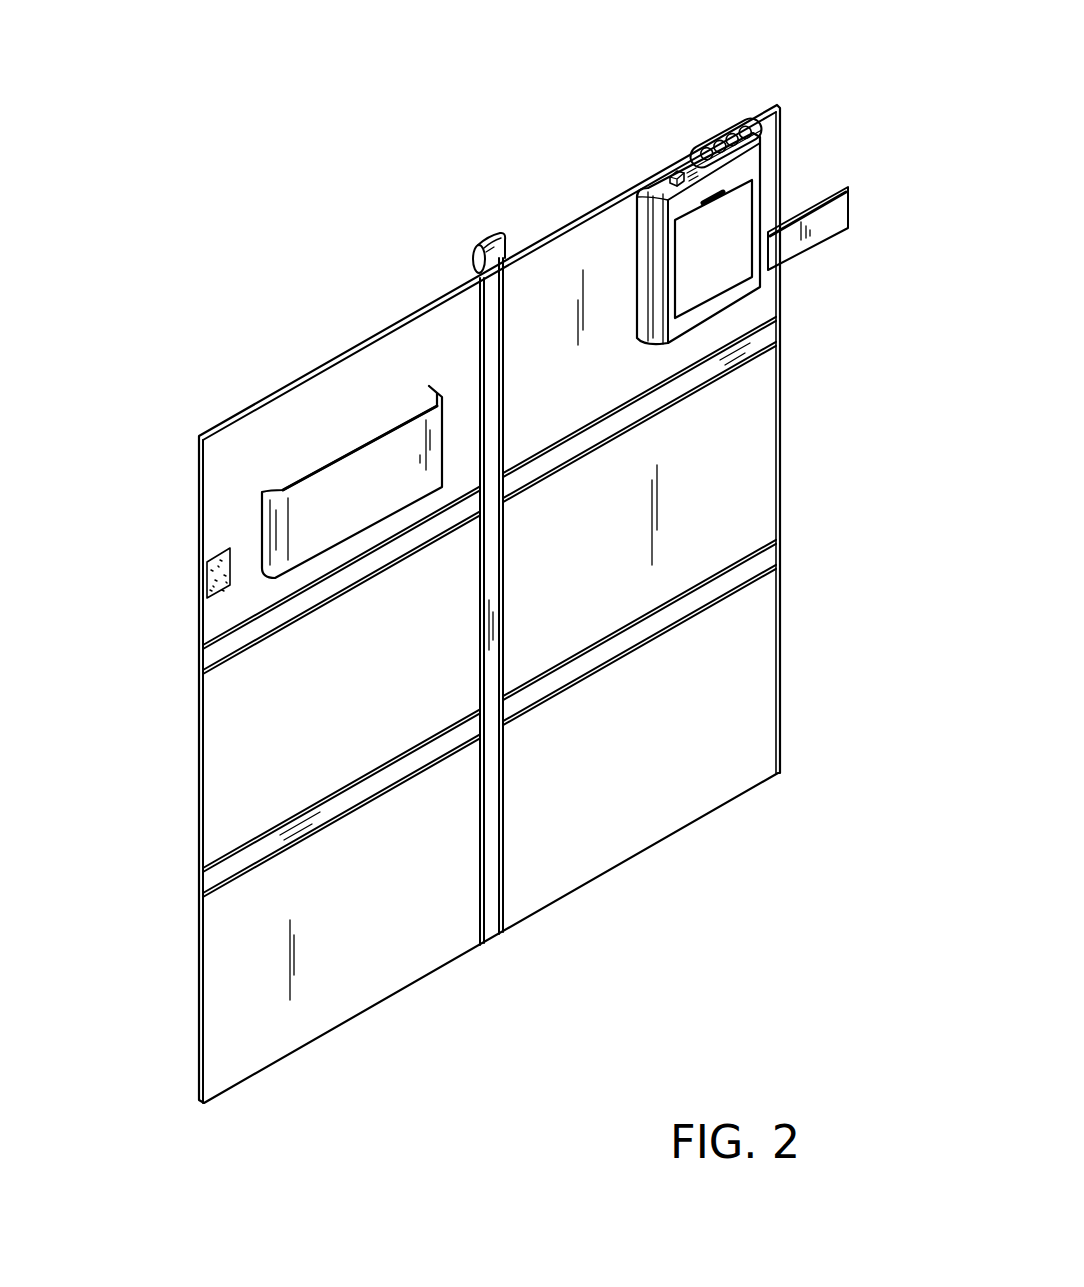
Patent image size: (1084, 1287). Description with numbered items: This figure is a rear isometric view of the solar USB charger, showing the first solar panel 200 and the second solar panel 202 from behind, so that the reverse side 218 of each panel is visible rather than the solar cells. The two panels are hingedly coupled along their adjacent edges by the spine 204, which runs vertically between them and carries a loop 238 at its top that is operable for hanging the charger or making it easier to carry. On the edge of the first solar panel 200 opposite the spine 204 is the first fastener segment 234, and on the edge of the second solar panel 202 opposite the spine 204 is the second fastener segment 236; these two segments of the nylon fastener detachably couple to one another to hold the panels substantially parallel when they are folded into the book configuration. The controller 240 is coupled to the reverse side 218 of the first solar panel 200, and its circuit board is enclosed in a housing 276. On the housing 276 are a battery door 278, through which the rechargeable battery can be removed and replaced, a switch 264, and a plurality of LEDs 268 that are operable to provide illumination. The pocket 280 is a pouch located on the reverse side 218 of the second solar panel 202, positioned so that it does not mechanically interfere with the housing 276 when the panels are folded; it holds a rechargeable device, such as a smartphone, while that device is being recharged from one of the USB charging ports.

The first solar panel 200 is at (565, 878).
The second solar panel 202 is at (298, 1030).
The spine 204 is at (495, 934).
The reverse side 218 is at (215, 765).
The first fastener segment 234 is at (832, 237).
The second fastener segment 236 is at (222, 573).
The loop 238 is at (490, 250).
The controller 240 is at (730, 215).
The switch 264 is at (624, 150).
The plurality of LEDs 268 is at (683, 147).
The housing 276 is at (738, 300).
The battery door 278 is at (737, 217).
The pocket 280 is at (346, 480).